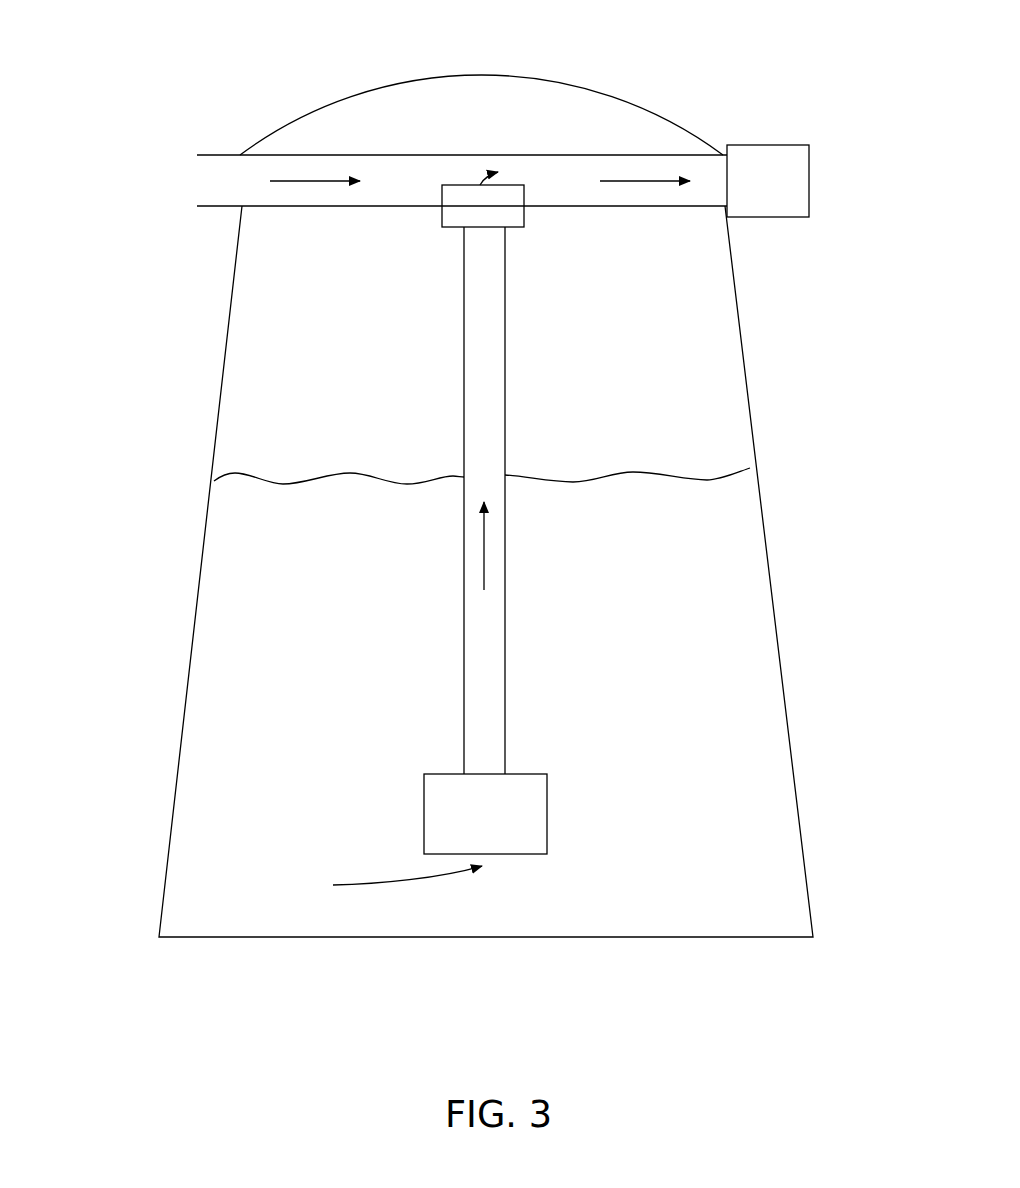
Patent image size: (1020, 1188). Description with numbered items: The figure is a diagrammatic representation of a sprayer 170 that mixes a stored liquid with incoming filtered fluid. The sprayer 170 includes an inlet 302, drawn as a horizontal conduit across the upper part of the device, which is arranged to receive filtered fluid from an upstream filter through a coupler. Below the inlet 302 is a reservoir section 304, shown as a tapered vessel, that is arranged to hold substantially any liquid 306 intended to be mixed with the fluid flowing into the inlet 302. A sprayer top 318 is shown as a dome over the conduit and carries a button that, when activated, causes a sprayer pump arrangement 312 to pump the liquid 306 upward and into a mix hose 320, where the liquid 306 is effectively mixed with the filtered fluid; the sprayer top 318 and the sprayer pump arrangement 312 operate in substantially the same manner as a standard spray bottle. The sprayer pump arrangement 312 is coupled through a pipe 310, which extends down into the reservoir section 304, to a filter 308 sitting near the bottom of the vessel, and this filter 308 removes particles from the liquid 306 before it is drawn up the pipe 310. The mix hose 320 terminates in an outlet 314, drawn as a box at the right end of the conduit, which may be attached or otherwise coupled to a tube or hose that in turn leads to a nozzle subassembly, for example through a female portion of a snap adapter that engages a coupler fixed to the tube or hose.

The sprayer 170 is at (241, 980).
The inlet 302 is at (218, 175).
The reservoir section 304 is at (213, 418).
The liquid 306 is at (718, 612).
The filter 308 is at (525, 835).
The pipe 310 is at (483, 388).
The sprayer pump arrangement 312 is at (503, 206).
The outlet 314 is at (788, 185).
The sprayer top 318 is at (585, 115).
The mix hose 320 is at (402, 175).